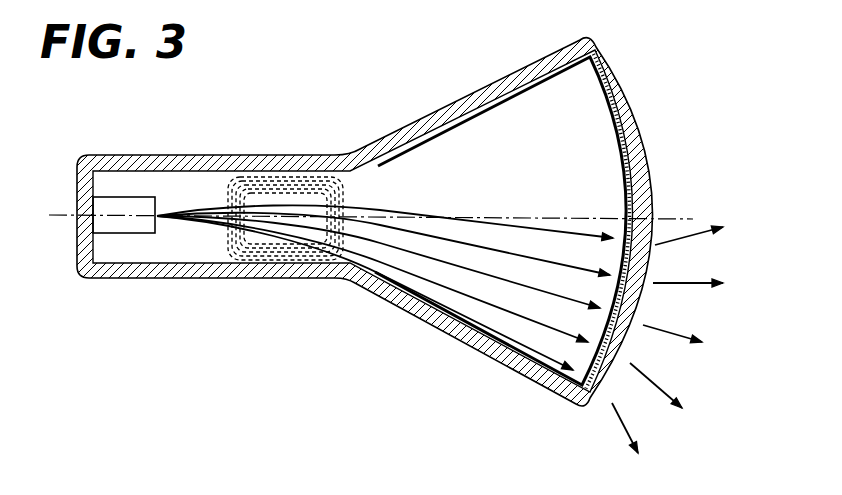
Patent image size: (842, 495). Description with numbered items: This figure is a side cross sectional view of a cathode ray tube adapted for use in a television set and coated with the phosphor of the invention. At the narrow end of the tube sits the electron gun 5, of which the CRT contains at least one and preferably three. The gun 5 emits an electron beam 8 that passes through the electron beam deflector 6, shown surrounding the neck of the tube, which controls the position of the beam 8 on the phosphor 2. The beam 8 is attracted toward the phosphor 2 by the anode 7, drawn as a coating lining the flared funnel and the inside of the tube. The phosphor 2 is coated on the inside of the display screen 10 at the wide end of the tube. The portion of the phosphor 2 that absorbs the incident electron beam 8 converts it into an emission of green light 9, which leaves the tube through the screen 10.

The phosphor 2 is at (612, 100).
The electron gun 5 is at (122, 195).
The electron beam deflector 6 is at (265, 180).
The anode 7 is at (450, 130).
The electron beam 8 is at (457, 218).
The green light 9 is at (697, 285).
The display screen 10 is at (645, 148).